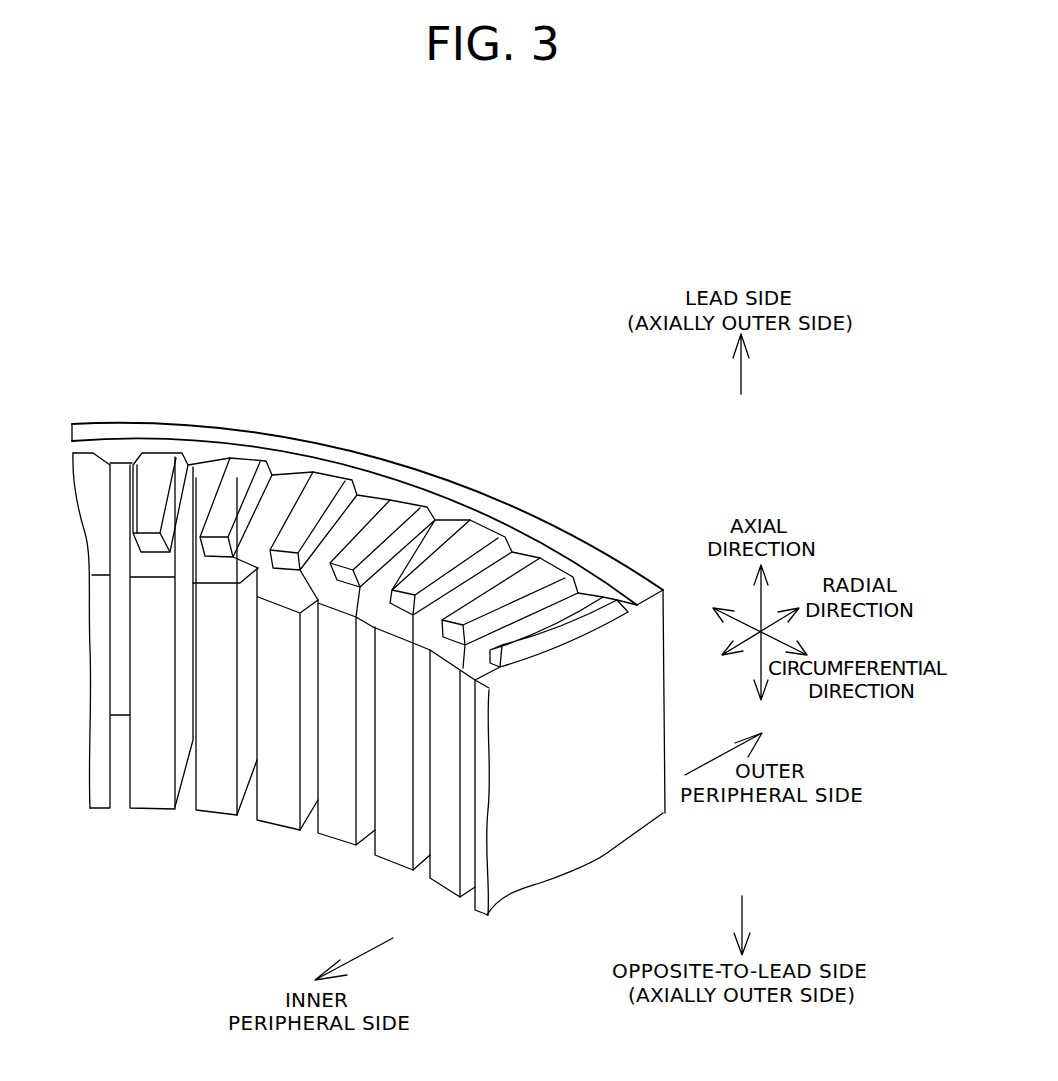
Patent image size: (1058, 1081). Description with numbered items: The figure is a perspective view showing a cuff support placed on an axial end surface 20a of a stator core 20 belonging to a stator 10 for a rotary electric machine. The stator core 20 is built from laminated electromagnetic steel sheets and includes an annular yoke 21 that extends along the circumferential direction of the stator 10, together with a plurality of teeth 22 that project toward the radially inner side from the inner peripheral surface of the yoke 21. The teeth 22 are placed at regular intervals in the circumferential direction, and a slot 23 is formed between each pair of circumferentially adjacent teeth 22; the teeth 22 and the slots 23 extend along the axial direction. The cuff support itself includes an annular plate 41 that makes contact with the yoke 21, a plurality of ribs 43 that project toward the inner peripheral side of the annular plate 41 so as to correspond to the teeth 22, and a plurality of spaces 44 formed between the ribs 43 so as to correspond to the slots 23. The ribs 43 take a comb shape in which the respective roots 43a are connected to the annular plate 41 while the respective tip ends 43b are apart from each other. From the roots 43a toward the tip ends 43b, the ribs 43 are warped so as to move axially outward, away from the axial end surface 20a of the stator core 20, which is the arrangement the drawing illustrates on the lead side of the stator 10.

The stator 10 is at (527, 222).
The stator core 20 is at (568, 530).
The axial end surface 20a is at (616, 566).
The yoke 21 is at (127, 437).
The teeth 22 is at (150, 667).
The slot 23 is at (190, 763).
The annular plate 41 is at (290, 463).
The ribs 43 is at (307, 527).
The roots 43a is at (333, 476).
The tip ends 43b is at (288, 558).
The spaces 44 is at (432, 551).